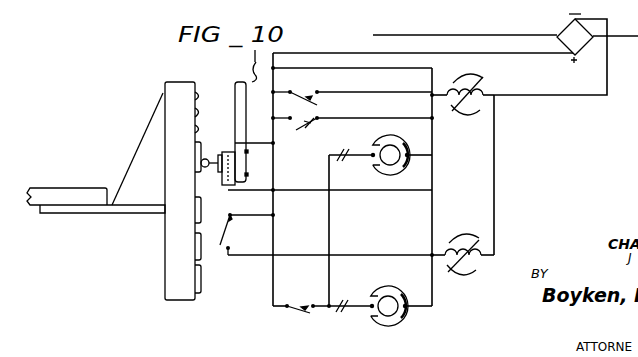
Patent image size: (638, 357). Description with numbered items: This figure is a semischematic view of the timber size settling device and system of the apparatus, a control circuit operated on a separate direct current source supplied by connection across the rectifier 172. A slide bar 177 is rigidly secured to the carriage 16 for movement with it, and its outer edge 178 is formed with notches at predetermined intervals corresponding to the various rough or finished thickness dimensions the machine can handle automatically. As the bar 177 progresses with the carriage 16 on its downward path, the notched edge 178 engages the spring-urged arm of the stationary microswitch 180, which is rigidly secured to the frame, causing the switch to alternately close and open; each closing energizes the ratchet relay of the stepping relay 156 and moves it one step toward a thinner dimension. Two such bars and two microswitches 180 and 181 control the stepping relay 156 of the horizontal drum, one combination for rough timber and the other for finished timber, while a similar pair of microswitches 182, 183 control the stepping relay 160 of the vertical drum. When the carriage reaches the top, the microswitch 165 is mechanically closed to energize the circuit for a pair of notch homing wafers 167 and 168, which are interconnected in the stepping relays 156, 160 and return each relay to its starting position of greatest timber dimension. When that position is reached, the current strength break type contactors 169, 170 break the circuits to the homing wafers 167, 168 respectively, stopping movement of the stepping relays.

The carriage 16 is at (66, 190).
The slide bar 177 is at (163, 93).
The outer edge 178 is at (200, 95).
The microswitch 180 is at (224, 186).
The microswitch 181 is at (216, 252).
The microswitch 182 is at (317, 105).
The microswitch 183 is at (352, 134).
The current strength break type contactor 170 is at (338, 147).
The notch homing wafer 168 is at (408, 166).
The notch homing wafer 167 is at (403, 314).
The microswitch 165 is at (303, 312).
The current strength break type contactor 169 is at (341, 310).
The stepping relay 160 is at (484, 90).
The stepping relay 156 is at (478, 240).
The rectifier 172 is at (564, 32).